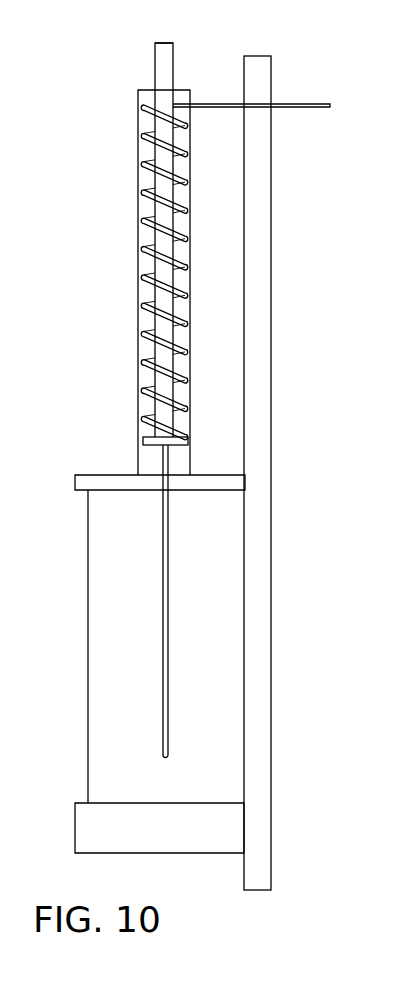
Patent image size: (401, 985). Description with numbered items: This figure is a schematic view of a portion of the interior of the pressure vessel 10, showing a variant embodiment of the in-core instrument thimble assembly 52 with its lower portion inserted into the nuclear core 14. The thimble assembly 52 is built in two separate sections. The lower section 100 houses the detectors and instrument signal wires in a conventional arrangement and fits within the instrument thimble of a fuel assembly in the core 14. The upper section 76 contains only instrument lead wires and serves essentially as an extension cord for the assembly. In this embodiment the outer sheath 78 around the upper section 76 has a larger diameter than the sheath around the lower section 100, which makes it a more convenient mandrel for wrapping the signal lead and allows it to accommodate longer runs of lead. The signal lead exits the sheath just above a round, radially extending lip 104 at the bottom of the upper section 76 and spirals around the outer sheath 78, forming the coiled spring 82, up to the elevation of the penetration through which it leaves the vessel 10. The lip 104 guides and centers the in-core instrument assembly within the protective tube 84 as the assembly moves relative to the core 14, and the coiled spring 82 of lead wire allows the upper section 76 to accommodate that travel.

The pressure vessel 10 is at (265, 688).
The nuclear core 14 is at (136, 678).
The in-core instrument thimble assembly 52 is at (140, 360).
The upper section 76 is at (155, 79).
The outer sheath 78 is at (155, 52).
The coiled spring 82 is at (143, 247).
The protective tube 84 is at (140, 408).
The lower section 100 is at (163, 597).
The radially extending lip 104 is at (143, 443).